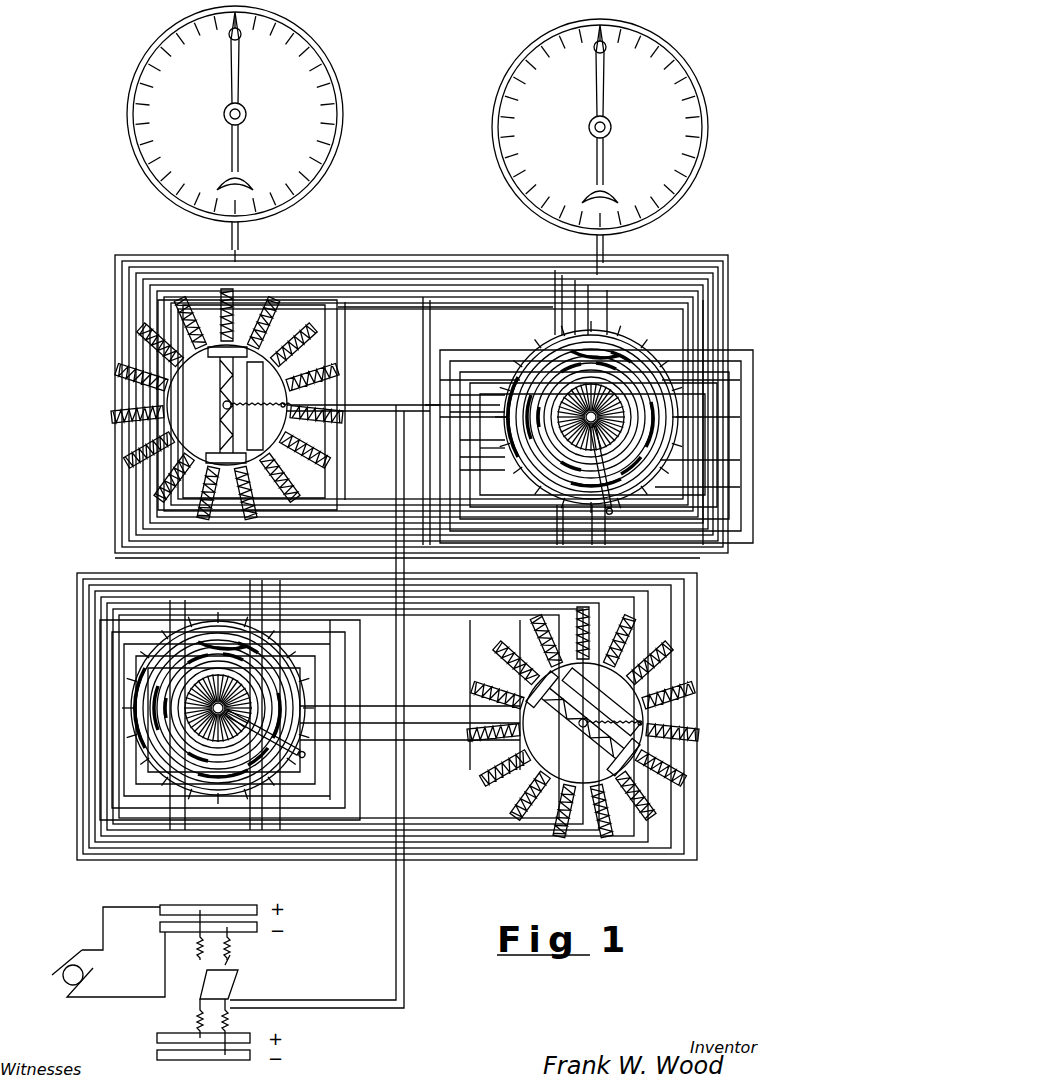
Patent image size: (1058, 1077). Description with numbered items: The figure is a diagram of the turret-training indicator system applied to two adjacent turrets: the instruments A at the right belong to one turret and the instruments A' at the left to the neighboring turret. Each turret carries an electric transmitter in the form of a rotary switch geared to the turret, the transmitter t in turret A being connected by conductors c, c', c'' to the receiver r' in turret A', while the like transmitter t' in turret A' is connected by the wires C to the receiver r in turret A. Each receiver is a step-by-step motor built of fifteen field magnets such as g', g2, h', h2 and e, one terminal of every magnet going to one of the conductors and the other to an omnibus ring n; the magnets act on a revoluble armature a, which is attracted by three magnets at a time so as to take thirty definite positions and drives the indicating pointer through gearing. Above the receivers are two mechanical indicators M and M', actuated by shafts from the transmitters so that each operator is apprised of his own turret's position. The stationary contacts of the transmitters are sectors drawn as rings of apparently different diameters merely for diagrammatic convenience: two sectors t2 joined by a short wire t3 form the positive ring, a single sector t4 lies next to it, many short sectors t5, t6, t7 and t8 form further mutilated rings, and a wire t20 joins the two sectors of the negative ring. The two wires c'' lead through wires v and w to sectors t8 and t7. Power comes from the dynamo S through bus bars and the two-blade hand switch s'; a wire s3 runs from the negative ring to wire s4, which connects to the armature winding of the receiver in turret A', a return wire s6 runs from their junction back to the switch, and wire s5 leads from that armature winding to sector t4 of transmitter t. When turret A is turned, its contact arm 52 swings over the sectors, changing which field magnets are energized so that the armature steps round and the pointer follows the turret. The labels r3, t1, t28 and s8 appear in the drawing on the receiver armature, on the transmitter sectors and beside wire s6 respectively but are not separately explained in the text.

The mechanical indicator M is at (614, 147).
The mechanical indicator M' is at (249, 134).
The omnibus ring n is at (192, 392).
The armature a is at (590, 718).
The electric transmitter t is at (591, 416).
The electric transmitter t' is at (218, 708).
The field magnet g' is at (263, 286).
The field magnet g2 is at (278, 300).
The receiver r' is at (324, 372).
The receiver r is at (680, 723).
The contact spring r3 is at (237, 417).
The field magnet h2 is at (150, 482).
The field magnet h' is at (198, 492).
The field magnet e is at (239, 492).
The conductor c is at (445, 408).
The conductor c' is at (421, 395).
The conductor c'' is at (407, 552).
The conductor C is at (438, 862).
The turret A is at (602, 429).
The turret A' is at (202, 405).
The wire s3 is at (462, 416).
The wire s4 is at (360, 410).
The wire s5 is at (360, 403).
The return wire s6 is at (394, 645).
The wire s8 is at (406, 662).
The contact ring t1 is at (477, 415).
The sector t2 is at (650, 375).
The short wire t3 is at (706, 425).
The sector t4 is at (700, 461).
The sector t5 is at (482, 470).
The sector t6 is at (482, 455).
The sector t7 is at (599, 468).
The sector t8 is at (600, 464).
The wire t20 is at (675, 377).
The contact ring t28 is at (495, 402).
The wire w is at (613, 535).
The wire v is at (592, 535).
The contact arm 52 is at (305, 768).
The dynamo S is at (106, 952).
The hand switch s' is at (219, 977).